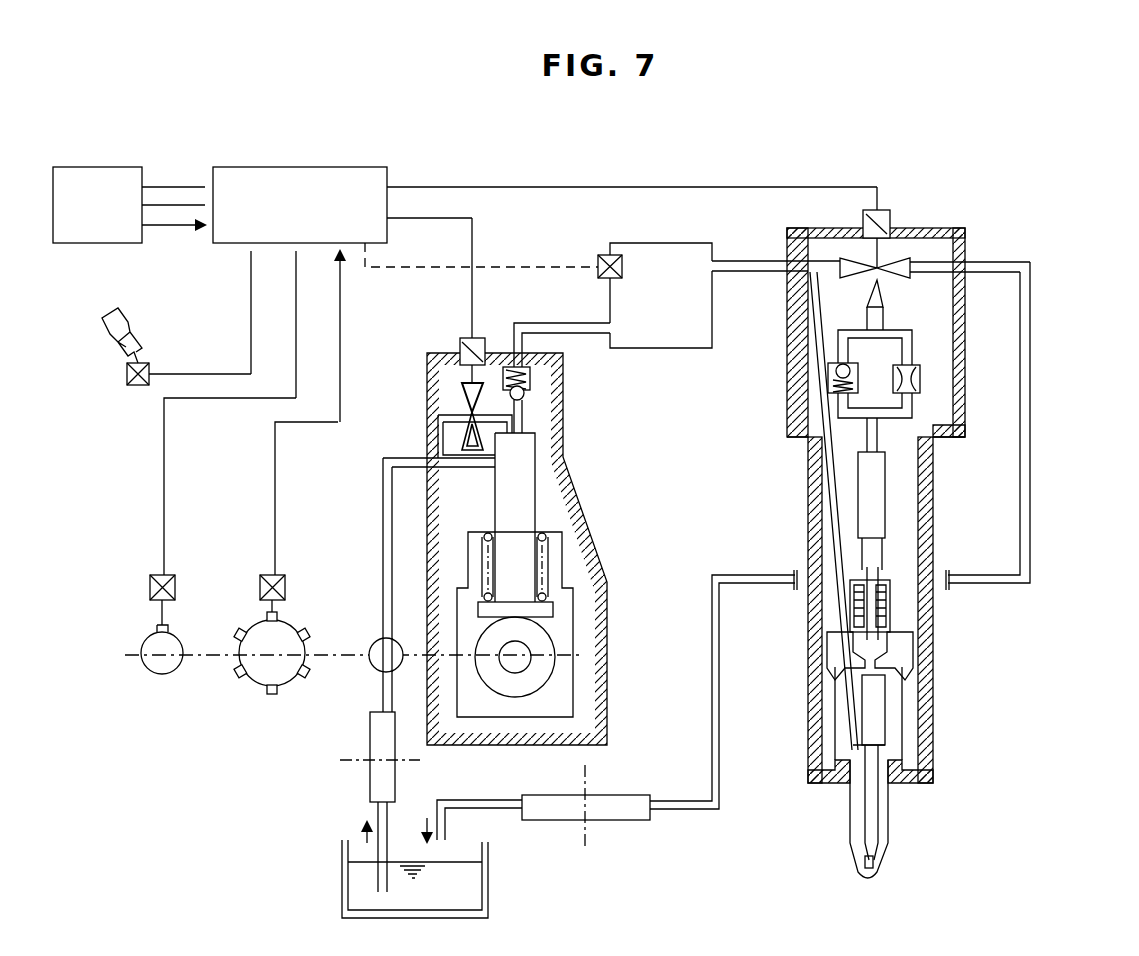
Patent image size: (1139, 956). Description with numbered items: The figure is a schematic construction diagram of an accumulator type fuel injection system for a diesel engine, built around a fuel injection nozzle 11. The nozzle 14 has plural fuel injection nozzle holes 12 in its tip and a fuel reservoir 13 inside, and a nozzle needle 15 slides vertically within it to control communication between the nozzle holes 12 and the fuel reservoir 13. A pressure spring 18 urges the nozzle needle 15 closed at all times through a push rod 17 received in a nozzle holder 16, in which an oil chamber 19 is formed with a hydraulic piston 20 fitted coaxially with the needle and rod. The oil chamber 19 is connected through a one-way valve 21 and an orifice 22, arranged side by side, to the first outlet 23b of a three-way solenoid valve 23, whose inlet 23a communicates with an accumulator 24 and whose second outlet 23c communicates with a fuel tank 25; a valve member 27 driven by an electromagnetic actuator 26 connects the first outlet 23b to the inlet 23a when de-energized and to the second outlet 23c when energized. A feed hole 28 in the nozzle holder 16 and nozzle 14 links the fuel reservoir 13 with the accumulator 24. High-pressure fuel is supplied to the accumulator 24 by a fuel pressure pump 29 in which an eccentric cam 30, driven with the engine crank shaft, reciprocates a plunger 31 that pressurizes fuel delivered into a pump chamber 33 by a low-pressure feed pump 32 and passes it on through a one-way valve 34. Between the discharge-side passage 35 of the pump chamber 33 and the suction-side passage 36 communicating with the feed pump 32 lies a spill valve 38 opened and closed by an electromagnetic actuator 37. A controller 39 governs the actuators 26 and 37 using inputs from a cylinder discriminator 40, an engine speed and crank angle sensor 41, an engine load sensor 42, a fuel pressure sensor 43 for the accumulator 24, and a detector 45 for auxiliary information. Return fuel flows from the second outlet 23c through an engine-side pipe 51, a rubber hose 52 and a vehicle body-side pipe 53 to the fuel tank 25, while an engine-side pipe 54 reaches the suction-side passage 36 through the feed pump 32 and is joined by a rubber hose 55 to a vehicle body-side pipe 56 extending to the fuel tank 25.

The fuel injection nozzle 11 is at (952, 485).
The fuel injection nozzle holes 12 is at (862, 868).
The fuel reservoir 13 is at (852, 752).
The nozzle 14 is at (850, 810).
The nozzle needle 15 is at (872, 710).
The nozzle holder 16 is at (910, 515).
The push rod 17 is at (880, 648).
The pressure spring 18 is at (893, 605).
The oil chamber 19 is at (860, 455).
The hydraulic piston 20 is at (866, 510).
The one-way valve 21 is at (828, 380).
The orifice 22 is at (922, 380).
The three-way solenoid valve 23 is at (940, 226).
The inlet 23a is at (808, 262).
The first outlet 23b is at (887, 316).
The second outlet 23c is at (945, 263).
The accumulator 24 is at (690, 349).
The fuel tank 25 is at (490, 884).
The electromagnetic actuator 26 is at (886, 210).
The valve member 27 is at (828, 228).
The feed hole 28 is at (830, 548).
The fuel pressure pump 29 is at (578, 483).
The eccentric cam 30 is at (546, 665).
The plunger 31 is at (535, 512).
The low-pressure feed pump 32 is at (380, 676).
The pump chamber 33 is at (535, 448).
The one-way valve 34 is at (532, 383).
The discharge-side passage 35 is at (522, 416).
The suction-side passage 36 is at (383, 482).
The electromagnetic actuator 37 is at (460, 345).
The spill valve 38 is at (462, 393).
The controller 39 is at (333, 167).
The cylinder discriminator 40 is at (150, 588).
The engine speed and crank angle sensor 41 is at (260, 588).
The engine load sensor 42 is at (127, 378).
The fuel pressure sensor 43 is at (606, 255).
The detector 45 is at (100, 167).
The engine-side pipe 51 is at (1032, 351).
The rubber hose 52 is at (620, 822).
The vehicle body-side pipe 53 is at (480, 800).
The engine-side pipe 54 is at (370, 712).
The rubber hose 55 is at (372, 775).
The vehicle body-side pipe 56 is at (378, 812).